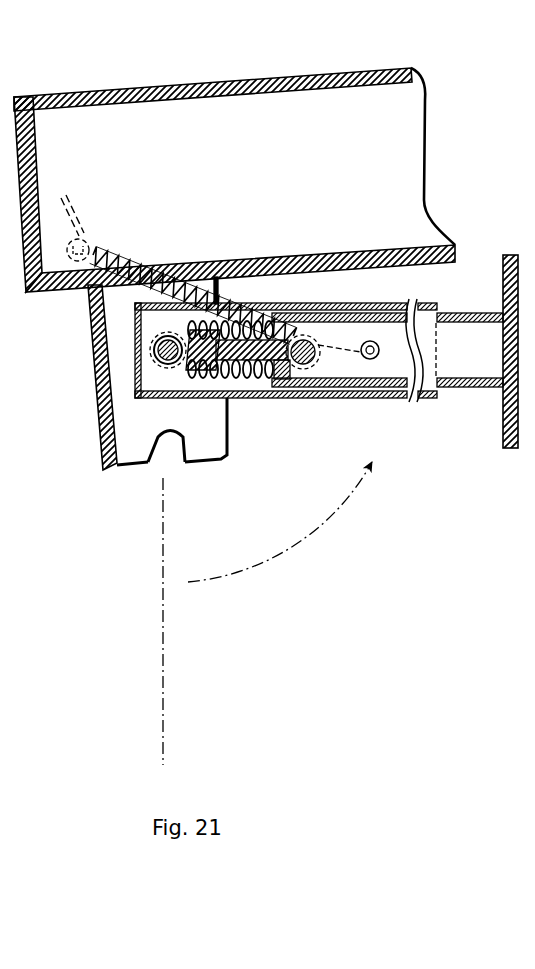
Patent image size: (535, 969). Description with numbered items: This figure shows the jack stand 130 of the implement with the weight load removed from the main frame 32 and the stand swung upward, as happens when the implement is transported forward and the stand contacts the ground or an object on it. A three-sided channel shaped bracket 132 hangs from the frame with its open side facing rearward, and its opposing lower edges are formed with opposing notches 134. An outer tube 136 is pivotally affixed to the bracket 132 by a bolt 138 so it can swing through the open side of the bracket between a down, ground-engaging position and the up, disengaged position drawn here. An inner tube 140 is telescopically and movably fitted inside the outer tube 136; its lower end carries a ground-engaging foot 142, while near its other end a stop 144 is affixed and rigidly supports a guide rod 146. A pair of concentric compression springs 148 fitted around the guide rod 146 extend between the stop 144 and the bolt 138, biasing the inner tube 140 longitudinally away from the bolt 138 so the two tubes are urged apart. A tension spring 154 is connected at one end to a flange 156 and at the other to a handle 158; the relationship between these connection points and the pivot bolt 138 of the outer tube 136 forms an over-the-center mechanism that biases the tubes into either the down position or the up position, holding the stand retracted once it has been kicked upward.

The housing/box 32 is at (260, 70).
The latch assembly 130 is at (128, 495).
The bracket 132 is at (212, 441).
The notches 134 is at (160, 442).
The outer tube 136 is at (335, 304).
The bolt 138 is at (148, 348).
The inner tube 140 is at (470, 392).
The ground-engaging foot 142 is at (508, 450).
The stop 144 is at (305, 398).
The guide rod 146 is at (242, 372).
The compression springs 148 is at (197, 382).
The tension spring 154 is at (128, 258).
The flange 156 is at (77, 210).
The handle 158 is at (379, 357).